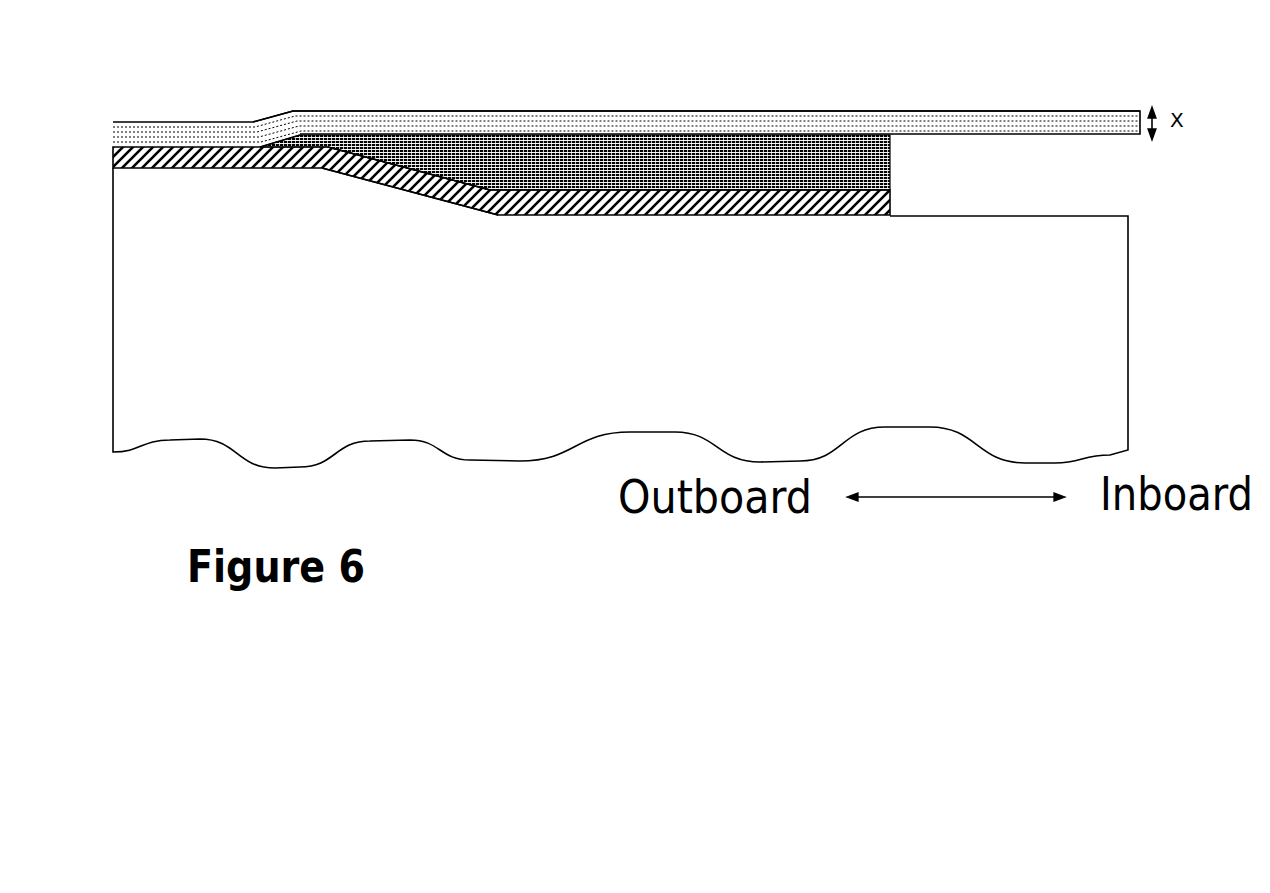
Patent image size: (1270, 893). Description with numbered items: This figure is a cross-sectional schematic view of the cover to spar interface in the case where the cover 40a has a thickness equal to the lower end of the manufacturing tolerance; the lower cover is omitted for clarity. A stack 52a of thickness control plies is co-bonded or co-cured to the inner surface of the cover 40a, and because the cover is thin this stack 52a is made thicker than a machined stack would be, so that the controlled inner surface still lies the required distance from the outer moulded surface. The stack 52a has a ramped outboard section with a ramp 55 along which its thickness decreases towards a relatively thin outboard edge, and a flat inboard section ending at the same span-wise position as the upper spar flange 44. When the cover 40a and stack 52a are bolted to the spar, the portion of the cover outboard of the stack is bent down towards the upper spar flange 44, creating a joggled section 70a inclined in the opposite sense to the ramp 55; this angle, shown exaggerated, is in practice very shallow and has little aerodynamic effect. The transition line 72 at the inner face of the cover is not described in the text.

The upper spar flange 44 is at (122, 168).
The ramp 55 is at (418, 170).
The stack of thickness control plies 52a is at (890, 163).
The cover 40a is at (702, 110).
The joggled section 70a is at (283, 112).
The transition boundary 72 is at (298, 140).